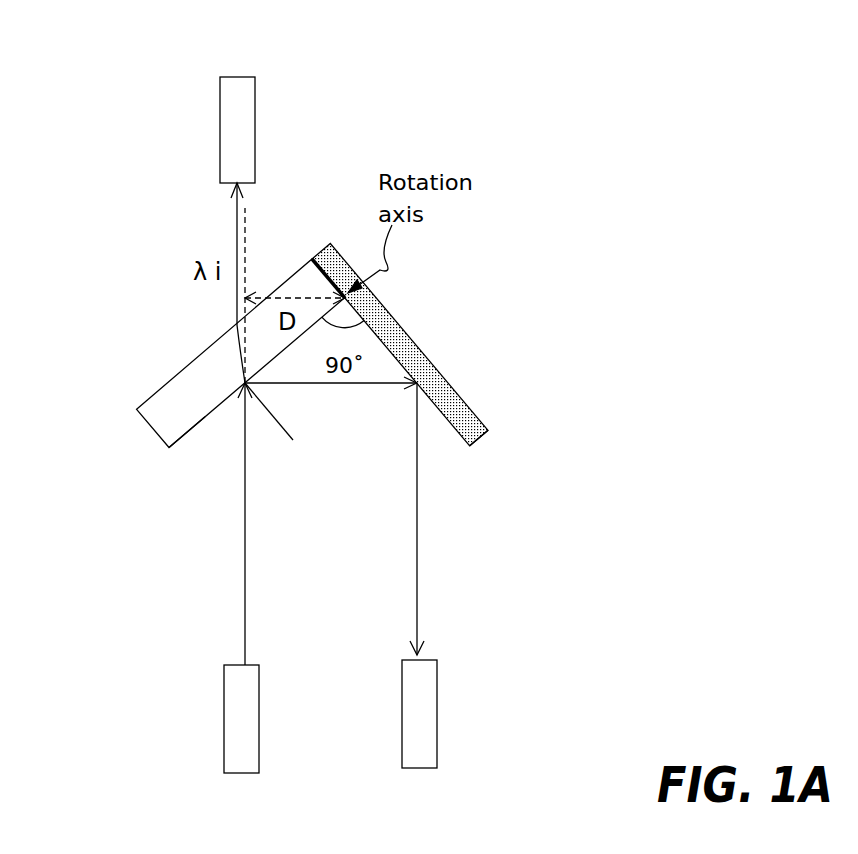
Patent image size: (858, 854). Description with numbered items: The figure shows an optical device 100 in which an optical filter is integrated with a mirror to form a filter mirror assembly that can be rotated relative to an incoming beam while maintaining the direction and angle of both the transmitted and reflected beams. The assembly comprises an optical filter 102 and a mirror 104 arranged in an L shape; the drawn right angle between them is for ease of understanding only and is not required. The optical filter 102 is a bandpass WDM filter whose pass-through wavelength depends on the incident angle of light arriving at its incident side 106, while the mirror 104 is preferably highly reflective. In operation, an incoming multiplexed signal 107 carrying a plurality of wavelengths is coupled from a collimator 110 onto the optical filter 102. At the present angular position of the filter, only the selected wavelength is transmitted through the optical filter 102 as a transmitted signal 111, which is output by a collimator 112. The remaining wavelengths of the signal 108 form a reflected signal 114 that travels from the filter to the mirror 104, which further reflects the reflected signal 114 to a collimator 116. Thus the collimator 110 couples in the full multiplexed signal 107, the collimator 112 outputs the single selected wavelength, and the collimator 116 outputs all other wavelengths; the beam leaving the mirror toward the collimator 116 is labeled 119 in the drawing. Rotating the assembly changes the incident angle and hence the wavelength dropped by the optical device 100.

The optical device 100 is at (640, 246).
The optical filter 102 is at (163, 397).
The mirror 104 is at (395, 328).
The incident side 106 is at (198, 427).
The incoming multiplexed signal 107 is at (247, 530).
The signal 108 is at (462, 437).
The collimator 110 is at (224, 697).
The transmitted signal 111 is at (240, 207).
The collimator 112 is at (245, 103).
The reflected signal 114 is at (332, 385).
The collimator 116 is at (432, 685).
The output beam 119 is at (418, 522).